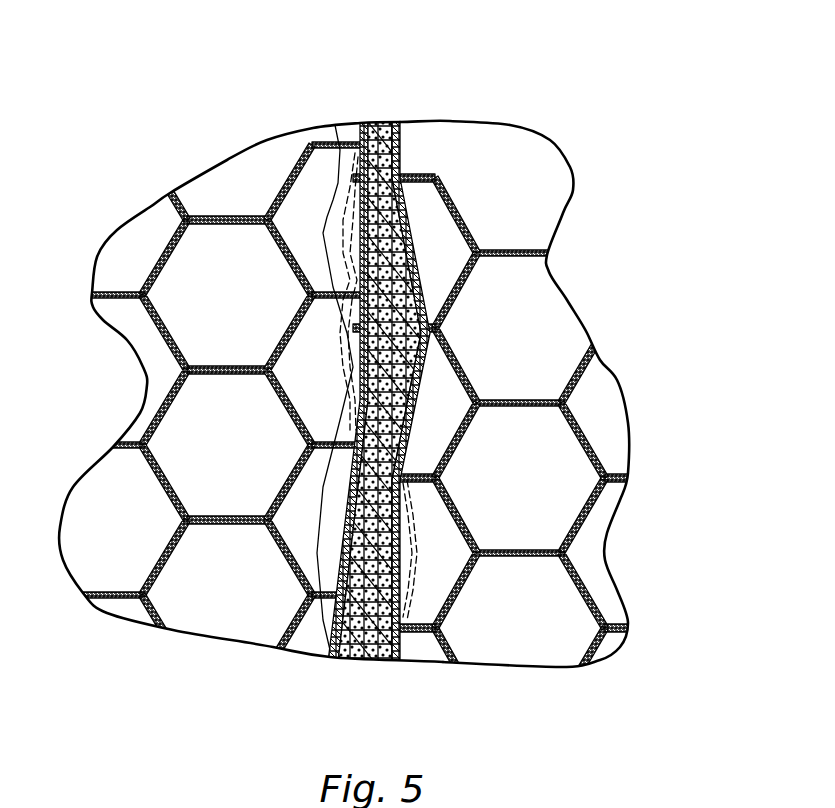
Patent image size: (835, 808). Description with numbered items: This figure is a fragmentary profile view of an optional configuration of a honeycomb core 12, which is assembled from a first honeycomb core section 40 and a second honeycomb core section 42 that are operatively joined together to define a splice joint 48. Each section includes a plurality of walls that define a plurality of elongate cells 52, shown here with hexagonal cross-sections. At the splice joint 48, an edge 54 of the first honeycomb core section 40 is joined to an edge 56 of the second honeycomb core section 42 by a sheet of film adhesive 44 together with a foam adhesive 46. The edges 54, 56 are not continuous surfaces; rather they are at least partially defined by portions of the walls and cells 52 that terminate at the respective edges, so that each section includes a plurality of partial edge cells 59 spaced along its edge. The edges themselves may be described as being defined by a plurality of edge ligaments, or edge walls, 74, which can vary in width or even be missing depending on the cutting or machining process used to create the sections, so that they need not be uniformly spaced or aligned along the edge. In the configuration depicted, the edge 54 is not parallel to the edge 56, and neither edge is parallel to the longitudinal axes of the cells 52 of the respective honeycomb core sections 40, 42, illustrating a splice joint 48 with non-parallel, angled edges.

The honeycomb core 12 is at (385, 403).
The first honeycomb core section 40 is at (251, 392).
The second honeycomb core section 42 is at (518, 384).
The sheet of film adhesive 44 is at (379, 367).
The foam adhesive 46 is at (380, 422).
The splice joint 48 is at (366, 403).
The elongate cells 52 is at (363, 424).
The edge of first honeycomb core section 54 is at (308, 429).
The edge of second honeycomb core section 56 is at (425, 432).
The partial edge cells 59 is at (377, 393).
The edge ligaments 74 is at (390, 392).